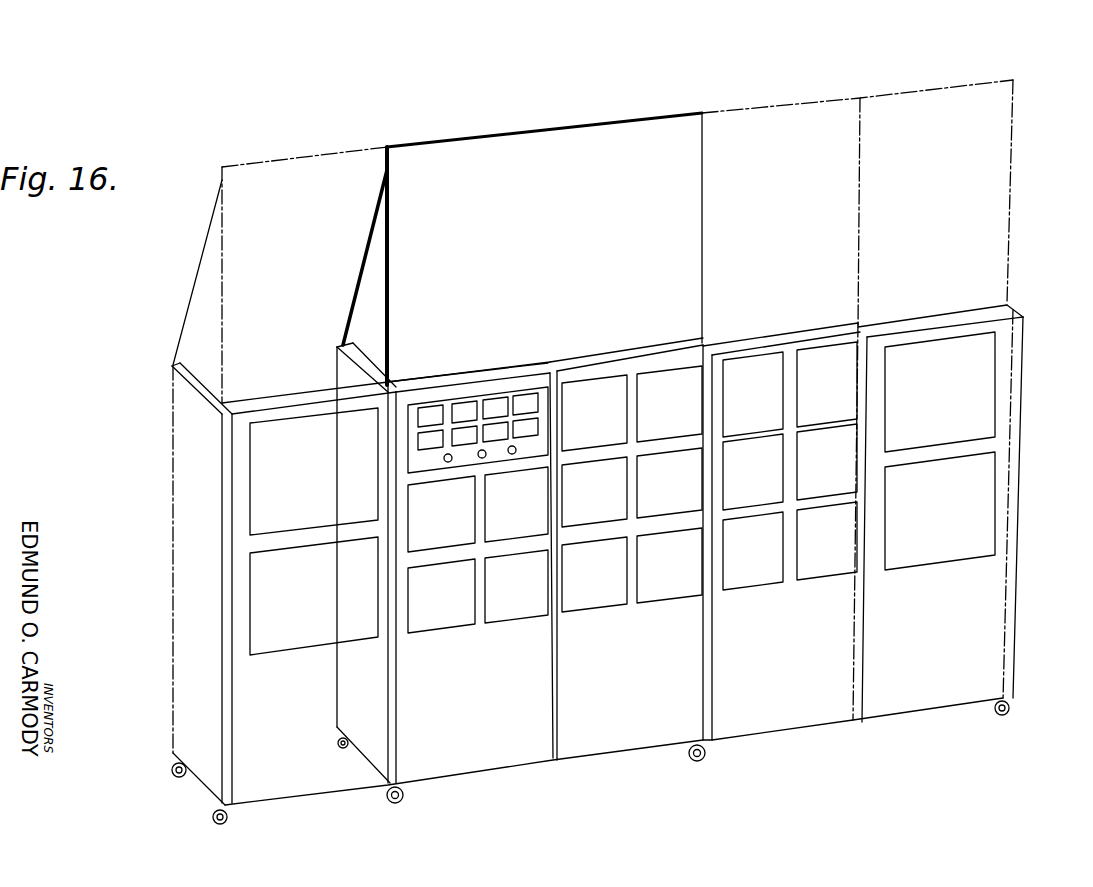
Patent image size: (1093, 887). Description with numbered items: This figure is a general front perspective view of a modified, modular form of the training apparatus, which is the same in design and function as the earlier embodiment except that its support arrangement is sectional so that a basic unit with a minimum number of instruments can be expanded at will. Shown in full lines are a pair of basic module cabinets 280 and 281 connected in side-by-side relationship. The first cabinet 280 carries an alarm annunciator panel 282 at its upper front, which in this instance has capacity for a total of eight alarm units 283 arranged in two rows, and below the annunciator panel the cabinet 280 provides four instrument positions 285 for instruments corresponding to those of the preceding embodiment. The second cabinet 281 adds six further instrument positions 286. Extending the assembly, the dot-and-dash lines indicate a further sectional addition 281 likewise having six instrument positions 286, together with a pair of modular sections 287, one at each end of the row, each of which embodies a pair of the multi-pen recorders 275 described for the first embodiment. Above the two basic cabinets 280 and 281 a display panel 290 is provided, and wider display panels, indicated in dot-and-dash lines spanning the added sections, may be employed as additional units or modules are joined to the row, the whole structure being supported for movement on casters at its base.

The multi-pen recorder 275 is at (253, 503).
The basic module cabinet 280 is at (495, 763).
The basic module cabinet 281 is at (612, 748).
The alarm annunciator panel 282 is at (512, 395).
The alarm unit 283 is at (435, 412).
The instrument position 285 is at (505, 615).
The instrument position 286 is at (612, 602).
The modular section 287 is at (327, 790).
The display panel 290 is at (537, 141).